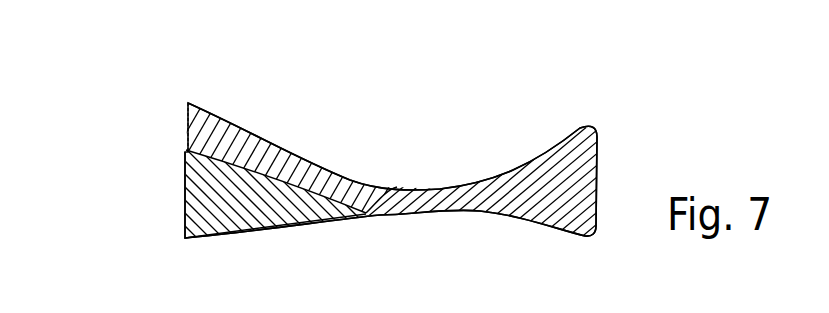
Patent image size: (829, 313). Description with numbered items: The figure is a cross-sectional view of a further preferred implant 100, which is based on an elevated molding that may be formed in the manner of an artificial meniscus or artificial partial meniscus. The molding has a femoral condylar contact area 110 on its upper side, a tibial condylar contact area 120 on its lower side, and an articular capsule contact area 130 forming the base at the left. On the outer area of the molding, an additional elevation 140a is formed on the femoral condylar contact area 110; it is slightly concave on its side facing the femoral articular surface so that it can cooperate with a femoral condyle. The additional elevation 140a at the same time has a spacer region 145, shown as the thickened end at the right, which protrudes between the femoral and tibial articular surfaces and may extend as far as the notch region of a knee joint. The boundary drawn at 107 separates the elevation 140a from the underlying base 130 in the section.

The implant 100 is at (165, 113).
The interface between upper layer and lower body 107 is at (186, 157).
The femoral condylar contact area 110 is at (307, 163).
The tibial condylar contact area 120 is at (262, 233).
The articular capsule contact area 130 is at (185, 193).
The additional elevation 140a is at (231, 142).
The spacer region 145 is at (472, 182).